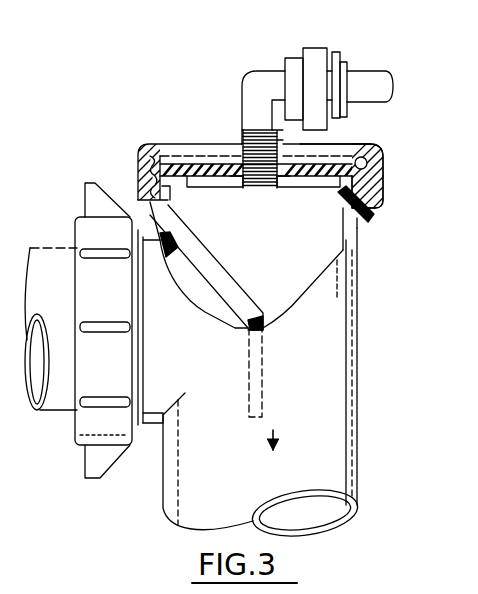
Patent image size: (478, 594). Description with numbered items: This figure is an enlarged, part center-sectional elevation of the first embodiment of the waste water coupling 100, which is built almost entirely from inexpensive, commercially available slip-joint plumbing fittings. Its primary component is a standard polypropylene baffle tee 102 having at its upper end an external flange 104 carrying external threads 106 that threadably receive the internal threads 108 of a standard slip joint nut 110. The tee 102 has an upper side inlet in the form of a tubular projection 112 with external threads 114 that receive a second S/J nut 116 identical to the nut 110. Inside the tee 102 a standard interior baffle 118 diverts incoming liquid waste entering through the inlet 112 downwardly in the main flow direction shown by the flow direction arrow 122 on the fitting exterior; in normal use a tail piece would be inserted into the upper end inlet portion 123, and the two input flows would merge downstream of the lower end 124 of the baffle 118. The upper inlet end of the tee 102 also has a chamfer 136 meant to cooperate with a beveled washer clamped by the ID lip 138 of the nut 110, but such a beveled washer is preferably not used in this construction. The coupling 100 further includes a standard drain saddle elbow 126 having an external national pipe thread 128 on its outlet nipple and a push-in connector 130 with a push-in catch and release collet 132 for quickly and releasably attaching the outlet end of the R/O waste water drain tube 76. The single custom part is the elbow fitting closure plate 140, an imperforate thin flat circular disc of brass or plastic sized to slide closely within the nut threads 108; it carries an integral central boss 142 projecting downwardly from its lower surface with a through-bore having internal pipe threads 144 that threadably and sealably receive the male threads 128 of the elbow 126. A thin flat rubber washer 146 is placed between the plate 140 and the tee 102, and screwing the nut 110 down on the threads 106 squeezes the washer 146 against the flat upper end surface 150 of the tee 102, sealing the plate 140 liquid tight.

The R/O waste water drain tube 76 is at (368, 73).
The coupling 100 is at (136, 149).
The baffle tee 102 is at (360, 308).
The external flange 104 is at (366, 212).
The external threads 106 is at (378, 190).
The internal threads 108 is at (383, 163).
The slip joint nut 110 is at (388, 145).
The tubular projection 112 is at (155, 415).
The external threads 114 is at (132, 197).
The second S/J nut 116 is at (77, 449).
The interior baffle 118 is at (238, 290).
The flow direction arrow 122 is at (277, 437).
The upper end inlet portion 123 is at (340, 210).
The lower end of baffle 124 is at (252, 417).
The drain saddle elbow 126 is at (243, 80).
The external national pipe thread 128 is at (240, 130).
The push-in connector 130 is at (311, 46).
The push-in catch and release collet 132 is at (340, 58).
The chamfer 136 is at (175, 195).
The ID lip 138 is at (338, 150).
The elbow fitting closure plate 140 is at (183, 132).
The central boss 142 is at (337, 192).
The internal pipe threads 144 is at (262, 182).
The flat rubber washer 146 is at (182, 190).
The flat upper end surface 150 is at (384, 175).